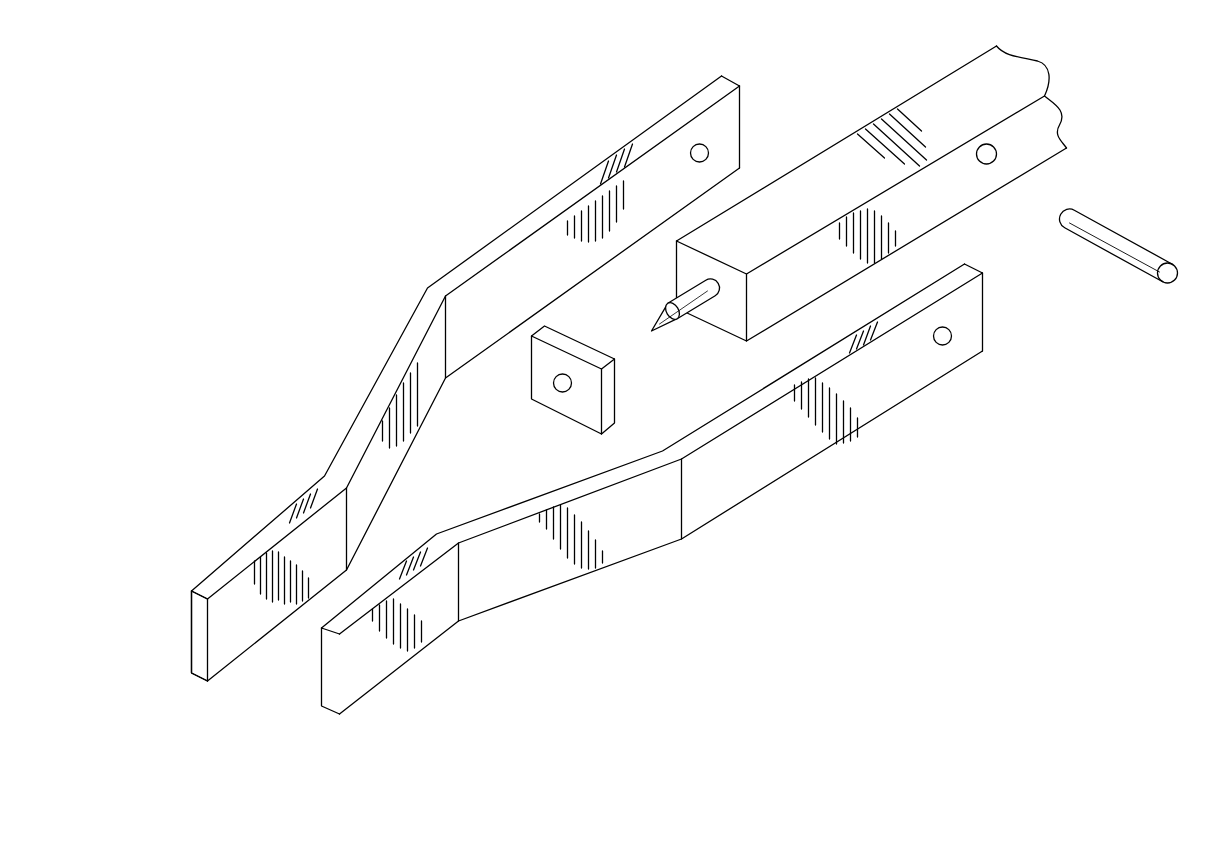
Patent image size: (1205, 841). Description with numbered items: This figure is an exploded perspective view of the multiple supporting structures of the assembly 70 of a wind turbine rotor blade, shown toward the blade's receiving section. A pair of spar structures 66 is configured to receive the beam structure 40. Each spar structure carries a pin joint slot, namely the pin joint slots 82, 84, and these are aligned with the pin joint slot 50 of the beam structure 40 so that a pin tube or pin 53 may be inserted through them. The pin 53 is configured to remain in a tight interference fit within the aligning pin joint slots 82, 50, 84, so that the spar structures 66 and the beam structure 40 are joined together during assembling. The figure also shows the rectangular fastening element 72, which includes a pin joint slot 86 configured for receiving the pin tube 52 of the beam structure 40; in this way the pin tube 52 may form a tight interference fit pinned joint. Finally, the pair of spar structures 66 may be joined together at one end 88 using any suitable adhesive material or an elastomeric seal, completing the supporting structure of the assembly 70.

The assembly 70 is at (335, 145).
The beam structure 40 is at (937, 93).
The pin joint slot 50 is at (989, 158).
The pin tube 52 is at (669, 327).
The pin 53 is at (1094, 225).
The spar structures 66 is at (433, 292).
The rectangular fastening element 72 is at (596, 355).
The pin joint slot 82 is at (943, 340).
The pin joint slot 84 is at (698, 150).
The pin joint slot 86 is at (578, 411).
The end 88 is at (245, 688).